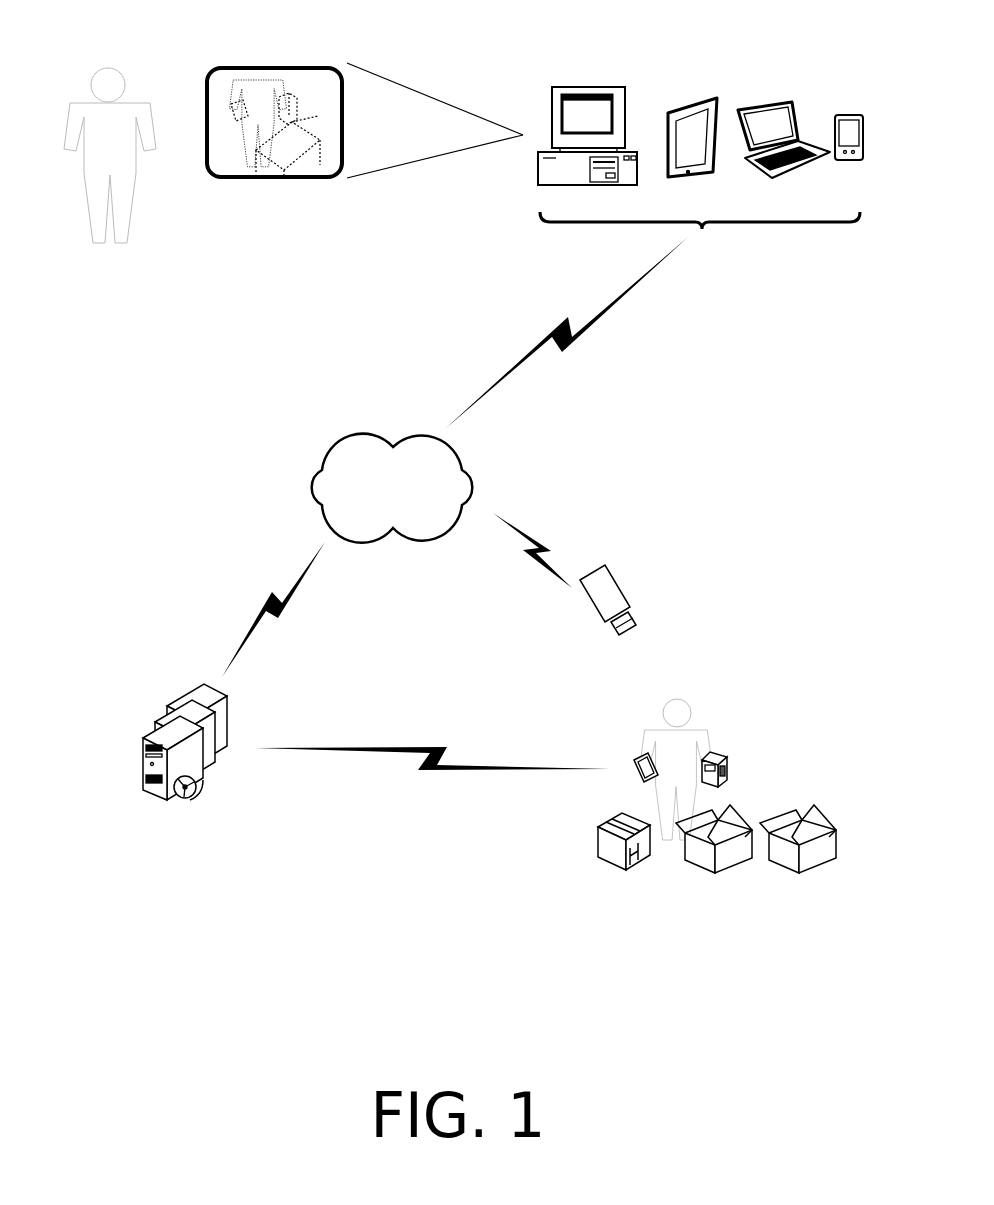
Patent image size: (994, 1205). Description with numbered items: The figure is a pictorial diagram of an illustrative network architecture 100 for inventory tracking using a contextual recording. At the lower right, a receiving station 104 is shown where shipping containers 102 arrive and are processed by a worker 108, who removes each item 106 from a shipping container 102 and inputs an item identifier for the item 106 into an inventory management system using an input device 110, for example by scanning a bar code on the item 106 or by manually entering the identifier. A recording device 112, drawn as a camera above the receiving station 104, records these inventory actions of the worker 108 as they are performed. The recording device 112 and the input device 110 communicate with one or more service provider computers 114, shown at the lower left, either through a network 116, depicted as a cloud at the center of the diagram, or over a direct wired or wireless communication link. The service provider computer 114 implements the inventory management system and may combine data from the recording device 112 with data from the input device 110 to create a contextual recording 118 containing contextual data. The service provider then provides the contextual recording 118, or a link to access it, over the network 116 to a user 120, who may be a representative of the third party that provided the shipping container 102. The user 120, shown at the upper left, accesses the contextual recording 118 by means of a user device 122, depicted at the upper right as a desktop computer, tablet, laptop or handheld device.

The network architecture 100 is at (252, 908).
The shipping container 102 is at (733, 817).
The receiving station 104 is at (729, 751).
The item 106 is at (725, 755).
The worker 108 is at (675, 698).
The input device 110 is at (637, 757).
The recording device 112 is at (604, 562).
The service provider computer 114 is at (135, 711).
The network 116 is at (392, 488).
The contextual recording 118 is at (282, 67).
The user 120 is at (108, 67).
The user device 122 is at (700, 158).